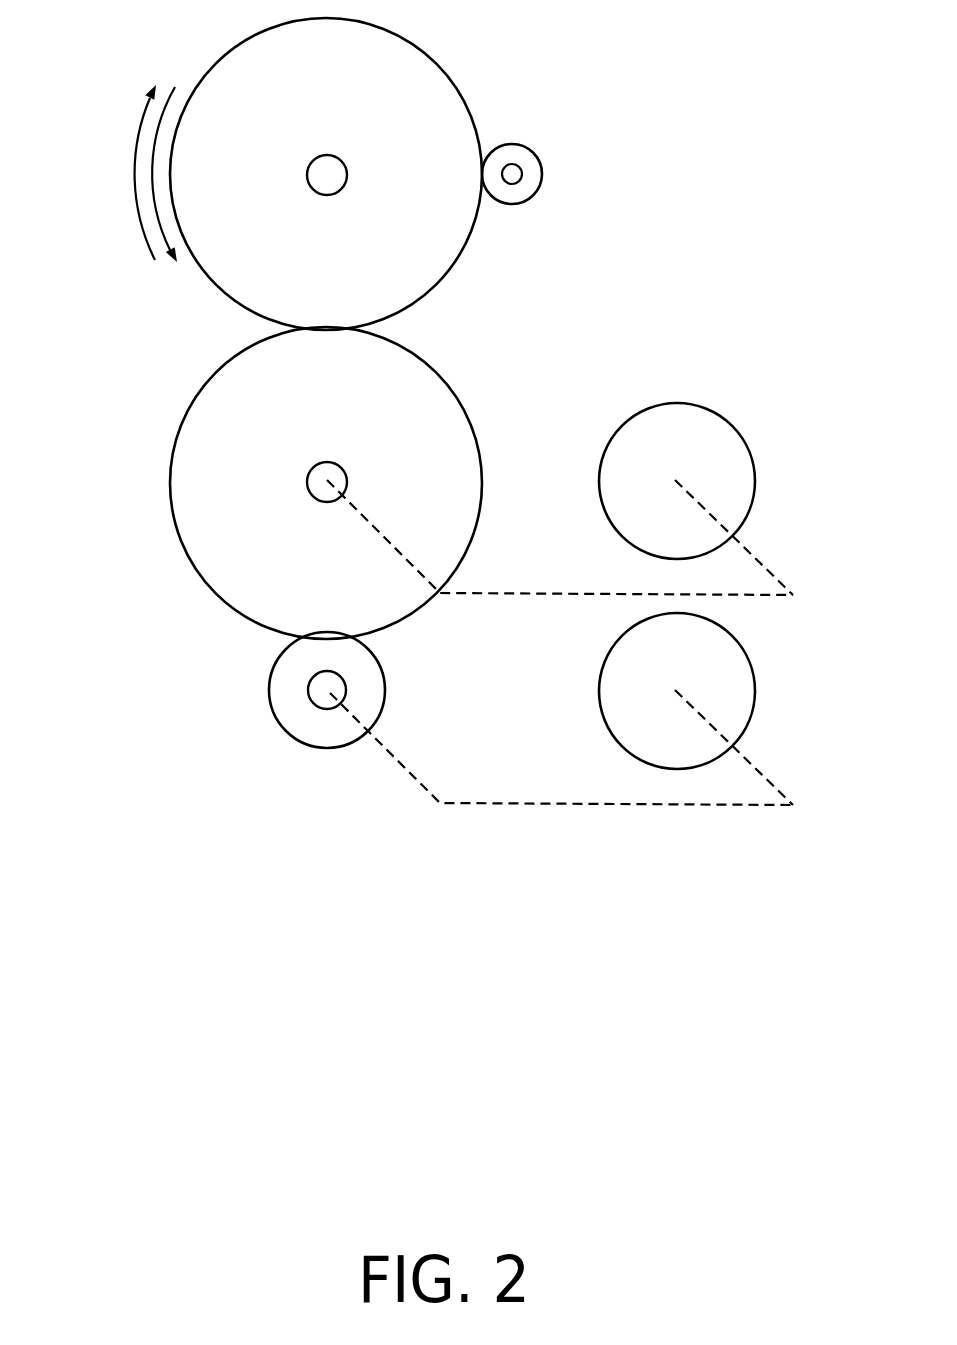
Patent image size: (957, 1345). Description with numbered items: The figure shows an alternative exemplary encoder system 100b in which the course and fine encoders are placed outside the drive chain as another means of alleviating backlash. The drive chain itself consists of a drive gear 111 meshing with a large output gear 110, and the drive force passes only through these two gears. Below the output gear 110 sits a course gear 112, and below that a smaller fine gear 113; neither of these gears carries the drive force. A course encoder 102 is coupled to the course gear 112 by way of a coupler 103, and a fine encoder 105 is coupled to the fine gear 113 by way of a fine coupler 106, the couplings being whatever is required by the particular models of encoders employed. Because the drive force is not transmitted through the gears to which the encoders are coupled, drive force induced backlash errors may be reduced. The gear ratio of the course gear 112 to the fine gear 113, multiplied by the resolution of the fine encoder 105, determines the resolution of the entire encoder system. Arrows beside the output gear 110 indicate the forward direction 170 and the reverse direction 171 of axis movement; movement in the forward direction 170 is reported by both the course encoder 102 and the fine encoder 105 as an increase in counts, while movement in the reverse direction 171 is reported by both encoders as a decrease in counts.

The encoder system 100b is at (691, 53).
The output gear 110 is at (433, 67).
The drive gear 111 is at (520, 157).
The course gear 112 is at (190, 442).
The fine gear 113 is at (278, 692).
The course encoder 102 is at (737, 462).
The coupler 103 is at (770, 572).
The fine encoder 105 is at (735, 672).
The fine coupler 106 is at (775, 785).
The forward direction 170 is at (150, 121).
The reverse direction 171 is at (160, 227).